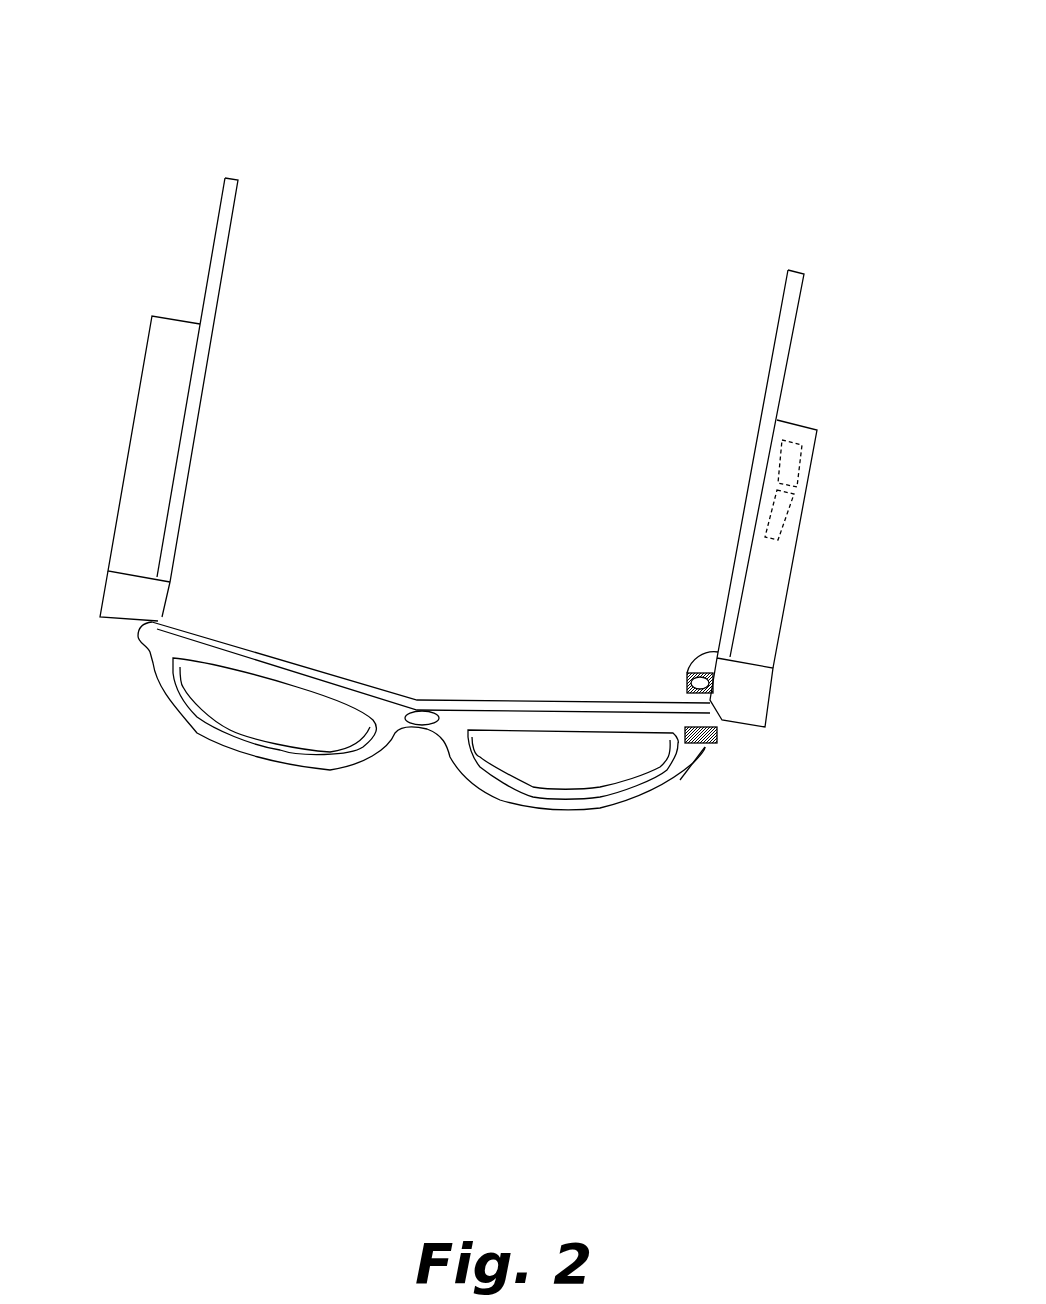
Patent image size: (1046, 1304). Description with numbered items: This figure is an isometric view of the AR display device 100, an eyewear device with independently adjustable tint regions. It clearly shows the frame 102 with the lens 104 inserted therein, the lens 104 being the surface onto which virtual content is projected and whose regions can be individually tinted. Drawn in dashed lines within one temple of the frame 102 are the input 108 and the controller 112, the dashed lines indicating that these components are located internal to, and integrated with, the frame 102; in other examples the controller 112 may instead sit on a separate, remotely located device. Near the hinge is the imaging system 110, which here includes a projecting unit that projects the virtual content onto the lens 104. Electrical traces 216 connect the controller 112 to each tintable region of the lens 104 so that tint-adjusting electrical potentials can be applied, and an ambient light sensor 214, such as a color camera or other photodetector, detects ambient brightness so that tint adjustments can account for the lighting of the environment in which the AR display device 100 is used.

The AR display device 100 is at (380, 98).
The frame 102 is at (215, 270).
The lens 104 is at (282, 725).
The input 108 is at (788, 476).
The imaging system 110 is at (702, 665).
The controller 112 is at (782, 534).
The ambient light sensor 214 is at (428, 728).
The electrical traces 216 is at (705, 747).